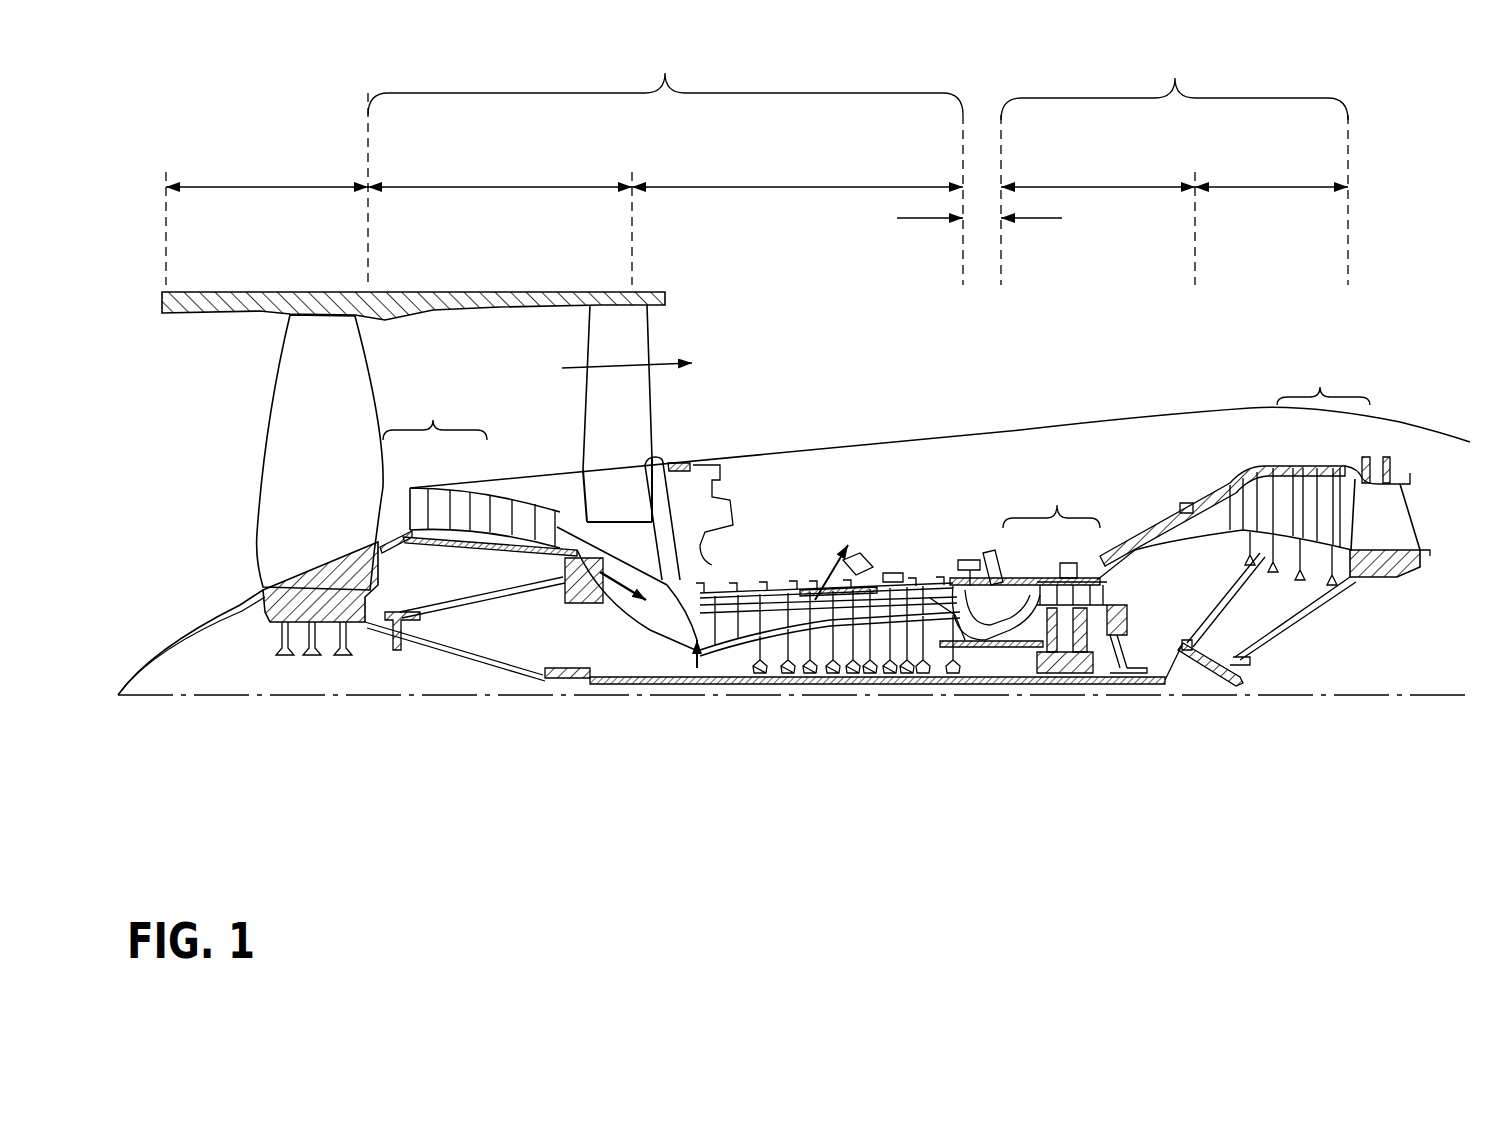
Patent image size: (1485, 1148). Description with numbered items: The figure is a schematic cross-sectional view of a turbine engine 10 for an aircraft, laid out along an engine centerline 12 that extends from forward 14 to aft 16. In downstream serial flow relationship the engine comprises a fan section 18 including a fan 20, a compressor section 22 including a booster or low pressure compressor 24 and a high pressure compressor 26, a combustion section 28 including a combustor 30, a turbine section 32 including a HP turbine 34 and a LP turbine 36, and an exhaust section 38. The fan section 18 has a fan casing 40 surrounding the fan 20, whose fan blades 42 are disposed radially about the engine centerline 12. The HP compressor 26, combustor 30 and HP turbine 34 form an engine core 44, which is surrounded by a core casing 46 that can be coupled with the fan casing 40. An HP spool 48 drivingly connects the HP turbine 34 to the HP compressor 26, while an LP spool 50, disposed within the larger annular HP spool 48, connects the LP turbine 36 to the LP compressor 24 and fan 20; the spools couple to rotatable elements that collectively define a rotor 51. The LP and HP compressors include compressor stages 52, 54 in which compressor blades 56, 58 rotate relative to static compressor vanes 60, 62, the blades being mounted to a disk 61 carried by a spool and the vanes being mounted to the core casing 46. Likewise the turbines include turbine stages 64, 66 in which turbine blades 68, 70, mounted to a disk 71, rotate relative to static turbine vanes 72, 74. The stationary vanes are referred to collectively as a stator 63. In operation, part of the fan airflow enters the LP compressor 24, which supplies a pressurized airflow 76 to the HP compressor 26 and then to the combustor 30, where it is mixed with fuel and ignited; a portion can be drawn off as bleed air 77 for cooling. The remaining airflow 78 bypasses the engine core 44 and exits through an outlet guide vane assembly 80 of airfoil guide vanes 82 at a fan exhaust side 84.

The turbine engine 10 is at (1365, 216).
The engine centerline 12 is at (247, 697).
The forward 14 is at (169, 426).
The aft 16 is at (1418, 520).
The fan section 18 is at (268, 187).
The fan 20 is at (243, 546).
The compressor section 22 is at (665, 73).
The low pressure compressor 24 is at (510, 187).
The high pressure compressor 26 is at (798, 187).
The combustion section 28 is at (910, 218).
The combustor 30 is at (1002, 592).
The turbine section 32 is at (1175, 78).
The HP turbine 34 is at (1097, 187).
The LP turbine 36 is at (1270, 187).
The exhaust section 38 is at (1412, 492).
The fan casing 40 is at (395, 292).
The fan blades 42 is at (340, 362).
The engine core 44 is at (927, 475).
The core casing 46 is at (1180, 505).
The HP spool 48 is at (960, 650).
The LP spool 50 is at (565, 683).
The rotor 51 is at (823, 687).
The compressor stages 52 is at (433, 420).
The compressor stages 54 is at (800, 575).
The compressor blades 56 is at (445, 492).
The compressor blades 58 is at (728, 600).
The static compressor vanes 60 is at (432, 492).
The disk 61 is at (468, 530).
The static compressor vanes 62 is at (690, 590).
The stator 63 is at (697, 668).
The turbine stages 64 is at (1057, 505).
The turbine stages 66 is at (1320, 387).
The turbine blades 68 is at (1058, 600).
The turbine blades 70 is at (1333, 478).
The disk 71 is at (1248, 555).
The static turbine vanes 72 is at (1045, 595).
The static turbine vanes 74 is at (1320, 478).
The pressurized airflow 76 is at (608, 600).
The bleed air 77 is at (822, 560).
The airflow 78 is at (580, 368).
The outlet guide vane assembly 80 is at (658, 428).
The airfoil guide vanes 82 is at (596, 400).
The fan exhaust side 84 is at (668, 336).